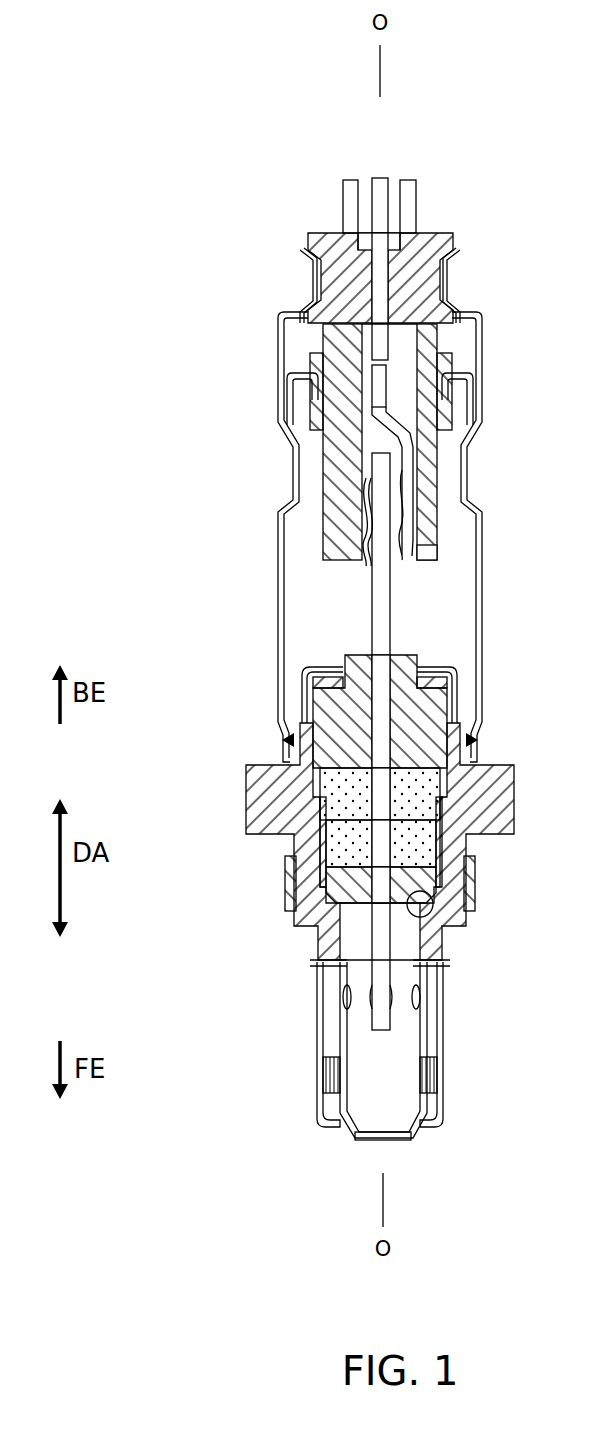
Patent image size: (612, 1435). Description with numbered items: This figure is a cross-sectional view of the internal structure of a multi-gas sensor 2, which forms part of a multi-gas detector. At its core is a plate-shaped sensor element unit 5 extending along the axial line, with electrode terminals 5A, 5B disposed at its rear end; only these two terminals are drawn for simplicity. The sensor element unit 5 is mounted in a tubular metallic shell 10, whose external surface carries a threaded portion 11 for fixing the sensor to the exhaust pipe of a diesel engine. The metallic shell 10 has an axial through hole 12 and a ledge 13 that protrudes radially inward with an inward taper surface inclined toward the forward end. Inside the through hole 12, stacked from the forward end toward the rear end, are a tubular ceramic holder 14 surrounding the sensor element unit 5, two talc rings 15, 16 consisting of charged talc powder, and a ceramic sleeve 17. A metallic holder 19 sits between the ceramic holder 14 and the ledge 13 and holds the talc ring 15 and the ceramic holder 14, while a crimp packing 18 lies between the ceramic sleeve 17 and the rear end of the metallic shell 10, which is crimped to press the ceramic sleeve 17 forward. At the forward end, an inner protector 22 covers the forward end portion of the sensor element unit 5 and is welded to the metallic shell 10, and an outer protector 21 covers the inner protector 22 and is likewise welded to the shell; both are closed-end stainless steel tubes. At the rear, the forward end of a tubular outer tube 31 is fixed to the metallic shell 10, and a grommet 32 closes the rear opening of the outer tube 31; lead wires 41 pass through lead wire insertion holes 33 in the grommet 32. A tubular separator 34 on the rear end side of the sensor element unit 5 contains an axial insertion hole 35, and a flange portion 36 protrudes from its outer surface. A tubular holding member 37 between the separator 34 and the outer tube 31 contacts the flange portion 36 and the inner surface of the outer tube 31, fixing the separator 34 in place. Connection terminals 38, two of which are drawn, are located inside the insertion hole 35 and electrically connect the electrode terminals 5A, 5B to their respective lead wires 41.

The multi-gas sensor 2 is at (470, 211).
The lead wires 41 is at (342, 198).
The lead wire insertion holes 33 is at (383, 285).
The grommet 32 is at (448, 287).
The outer tube 31 is at (484, 478).
The separator 34 is at (323, 462).
The flange portion 36 is at (308, 358).
The holding member 37 is at (453, 357).
The insertion hole 35 is at (372, 421).
The connection terminals 38 is at (366, 516).
The sensor element unit 5 is at (392, 800).
The electrode terminal 5A is at (394, 568).
The electrode terminal 5B is at (368, 568).
The crimp packing 18 is at (448, 682).
The ceramic sleeve 17 is at (447, 726).
The talc ring 16 is at (442, 785).
The talc ring 15 is at (442, 852).
The ceramic holder 14 is at (438, 882).
The metallic shell 10 is at (246, 792).
The threaded portion 11 is at (285, 880).
The ledge 13 is at (432, 918).
The metallic holder 19 is at (433, 904).
The through hole 12 is at (357, 955).
The outer protector 21 is at (445, 1034).
The inner protector 22 is at (418, 1140).